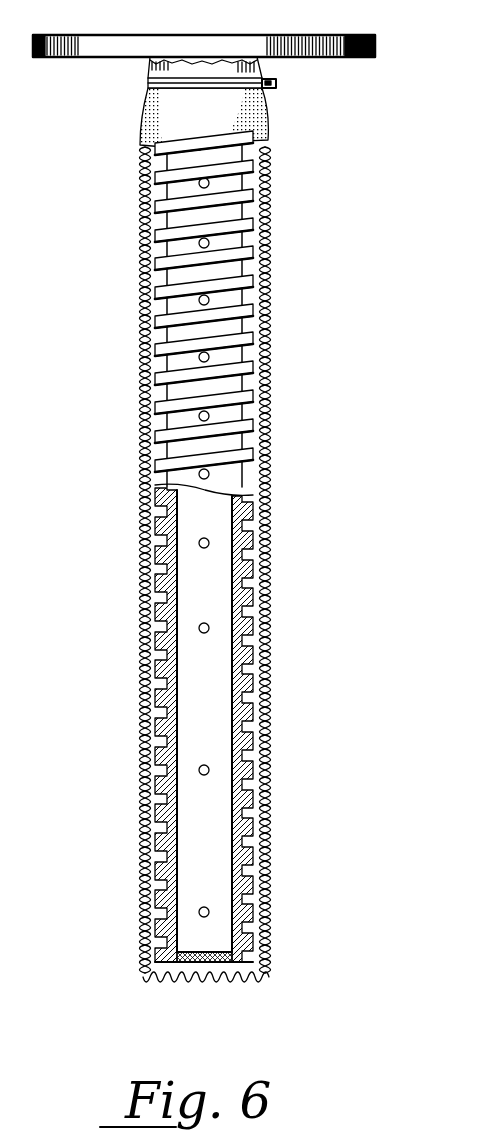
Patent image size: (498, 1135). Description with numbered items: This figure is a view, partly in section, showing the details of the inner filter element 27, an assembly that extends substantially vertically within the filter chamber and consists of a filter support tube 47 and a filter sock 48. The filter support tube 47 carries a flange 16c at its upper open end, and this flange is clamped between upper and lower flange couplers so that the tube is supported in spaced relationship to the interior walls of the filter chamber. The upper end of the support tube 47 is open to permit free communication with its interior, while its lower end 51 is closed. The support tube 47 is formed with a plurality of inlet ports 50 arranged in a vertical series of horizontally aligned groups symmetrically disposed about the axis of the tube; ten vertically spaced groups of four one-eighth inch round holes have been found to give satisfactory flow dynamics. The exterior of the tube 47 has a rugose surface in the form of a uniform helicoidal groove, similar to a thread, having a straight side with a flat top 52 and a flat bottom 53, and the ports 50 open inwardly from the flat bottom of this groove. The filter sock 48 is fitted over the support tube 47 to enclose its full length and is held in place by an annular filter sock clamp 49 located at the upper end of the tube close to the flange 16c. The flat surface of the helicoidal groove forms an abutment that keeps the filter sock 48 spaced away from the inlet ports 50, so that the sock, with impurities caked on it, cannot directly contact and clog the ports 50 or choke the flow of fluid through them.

The flange 16c is at (377, 50).
The inner filter element 27 is at (197, 574).
The filter support tube 47 is at (209, 524).
The filter sock 48 is at (138, 108).
The filter sock clamp 49 is at (277, 84).
The inlet ports 50 is at (210, 182).
The lower end 51 is at (205, 963).
The top of helicoidal groove 52 is at (160, 176).
The bottom of helicoidal groove 53 is at (166, 218).